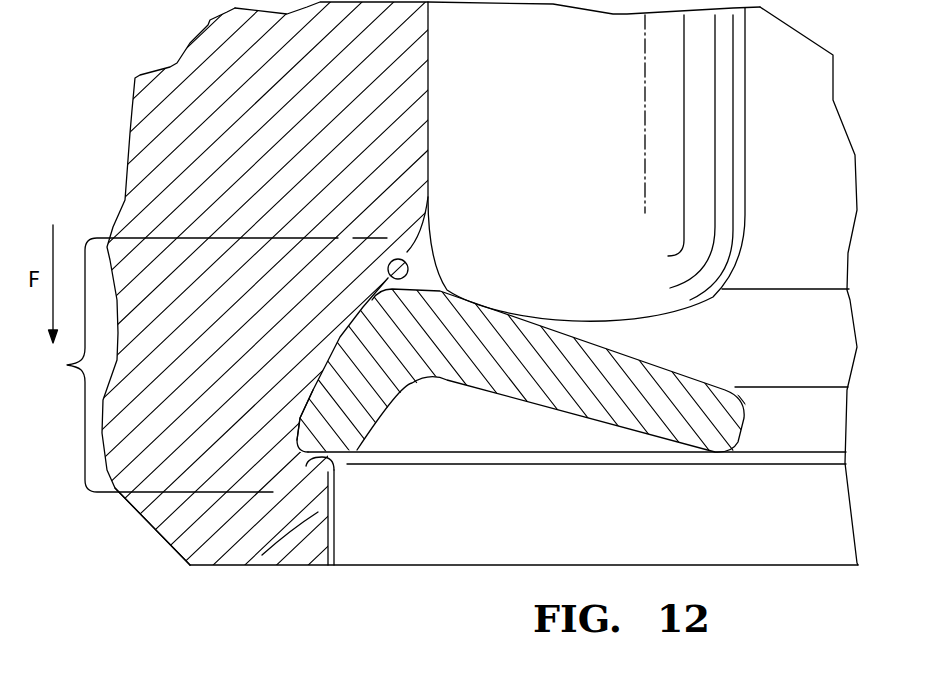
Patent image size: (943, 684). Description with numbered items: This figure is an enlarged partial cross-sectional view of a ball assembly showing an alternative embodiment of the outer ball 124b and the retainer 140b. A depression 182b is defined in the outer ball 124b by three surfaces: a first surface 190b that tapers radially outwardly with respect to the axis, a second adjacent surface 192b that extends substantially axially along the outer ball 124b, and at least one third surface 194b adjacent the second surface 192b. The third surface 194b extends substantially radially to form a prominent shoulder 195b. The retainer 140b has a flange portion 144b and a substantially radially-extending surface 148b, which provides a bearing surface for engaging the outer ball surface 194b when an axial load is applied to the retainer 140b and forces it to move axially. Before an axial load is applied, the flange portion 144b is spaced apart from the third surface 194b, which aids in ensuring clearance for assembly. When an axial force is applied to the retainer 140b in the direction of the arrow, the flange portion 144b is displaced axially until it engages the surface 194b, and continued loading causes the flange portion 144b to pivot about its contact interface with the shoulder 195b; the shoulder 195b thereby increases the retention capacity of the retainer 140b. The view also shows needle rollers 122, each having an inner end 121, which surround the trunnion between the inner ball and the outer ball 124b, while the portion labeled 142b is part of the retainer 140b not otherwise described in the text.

The first surface 190b is at (388, 280).
The needle rollers 122 is at (752, 64).
The inner end 121 is at (717, 227).
The retainer 140b is at (716, 377).
The first leg 142b is at (727, 413).
The flange portion 144b is at (412, 455).
The substantially radially-extending surface 148b is at (345, 456).
The third surface 194b is at (334, 565).
The shoulder 195b is at (307, 517).
The outer ball 124b is at (143, 520).
The second surface 192b is at (297, 417).
The depression 182b is at (197, 365).